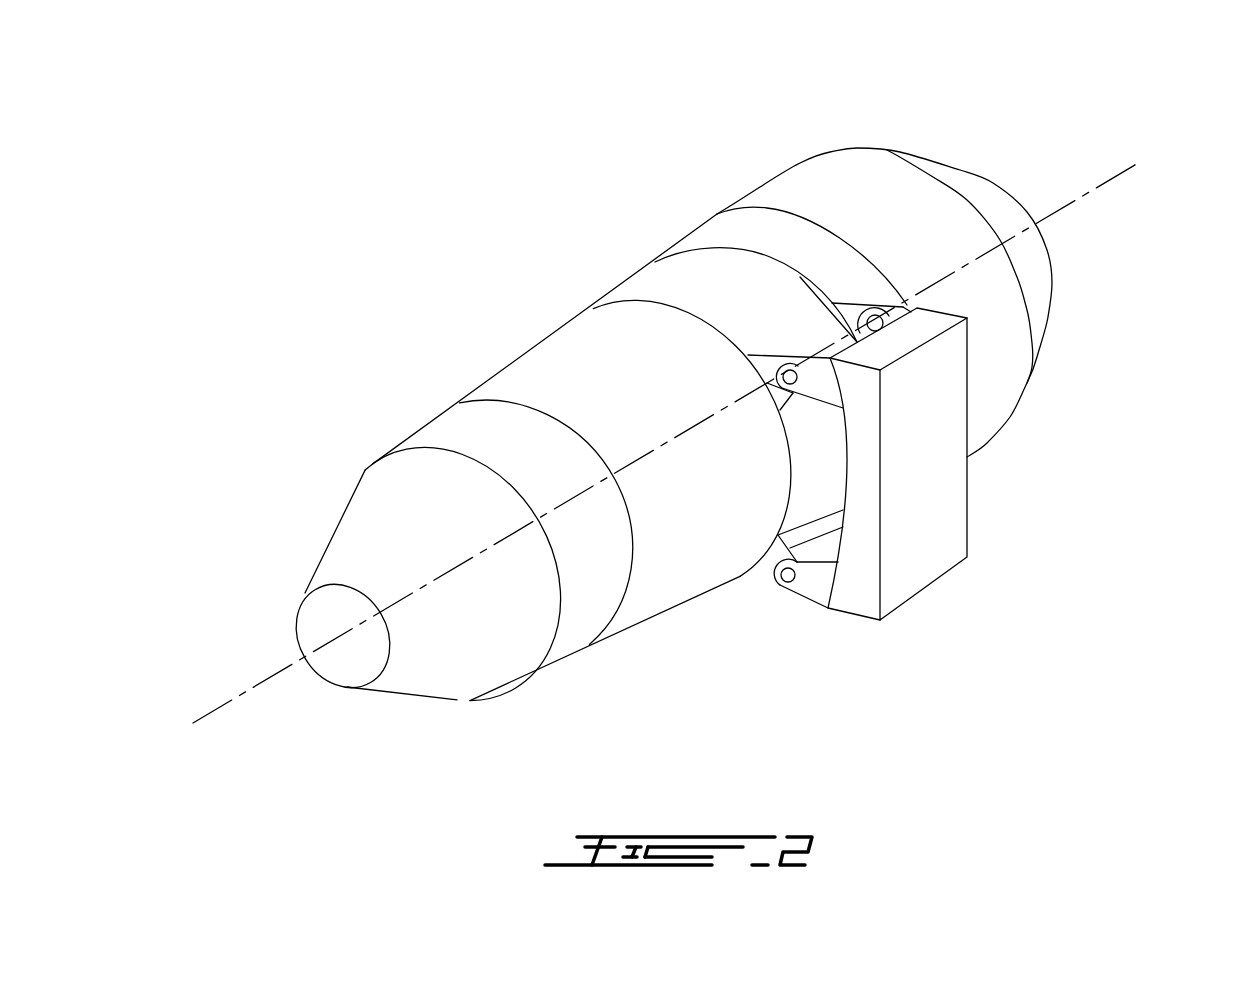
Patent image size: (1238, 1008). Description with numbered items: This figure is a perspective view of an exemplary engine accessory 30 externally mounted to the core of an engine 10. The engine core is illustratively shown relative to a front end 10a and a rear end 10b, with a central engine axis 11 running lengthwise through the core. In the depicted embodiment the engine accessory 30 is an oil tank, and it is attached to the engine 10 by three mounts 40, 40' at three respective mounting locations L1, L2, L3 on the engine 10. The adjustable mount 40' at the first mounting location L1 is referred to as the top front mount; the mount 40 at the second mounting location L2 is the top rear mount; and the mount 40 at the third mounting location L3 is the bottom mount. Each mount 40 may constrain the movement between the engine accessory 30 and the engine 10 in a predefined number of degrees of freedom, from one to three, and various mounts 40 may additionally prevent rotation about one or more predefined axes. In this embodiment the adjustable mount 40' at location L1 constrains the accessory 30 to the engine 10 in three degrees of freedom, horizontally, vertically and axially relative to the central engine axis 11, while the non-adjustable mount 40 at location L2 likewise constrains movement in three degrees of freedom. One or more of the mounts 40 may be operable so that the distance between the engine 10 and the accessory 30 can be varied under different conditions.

The engine 10 is at (333, 467).
The front end 10a is at (323, 620).
The rear end 10b is at (1058, 253).
The central engine axis 11 is at (1114, 170).
The engine accessory 30 is at (995, 558).
The mount 40 is at (868, 420).
The adjustable mount 40' is at (771, 272).
The first mounting location L1 is at (745, 380).
The second mounting location L2 is at (847, 293).
The third mounting location L3 is at (747, 543).